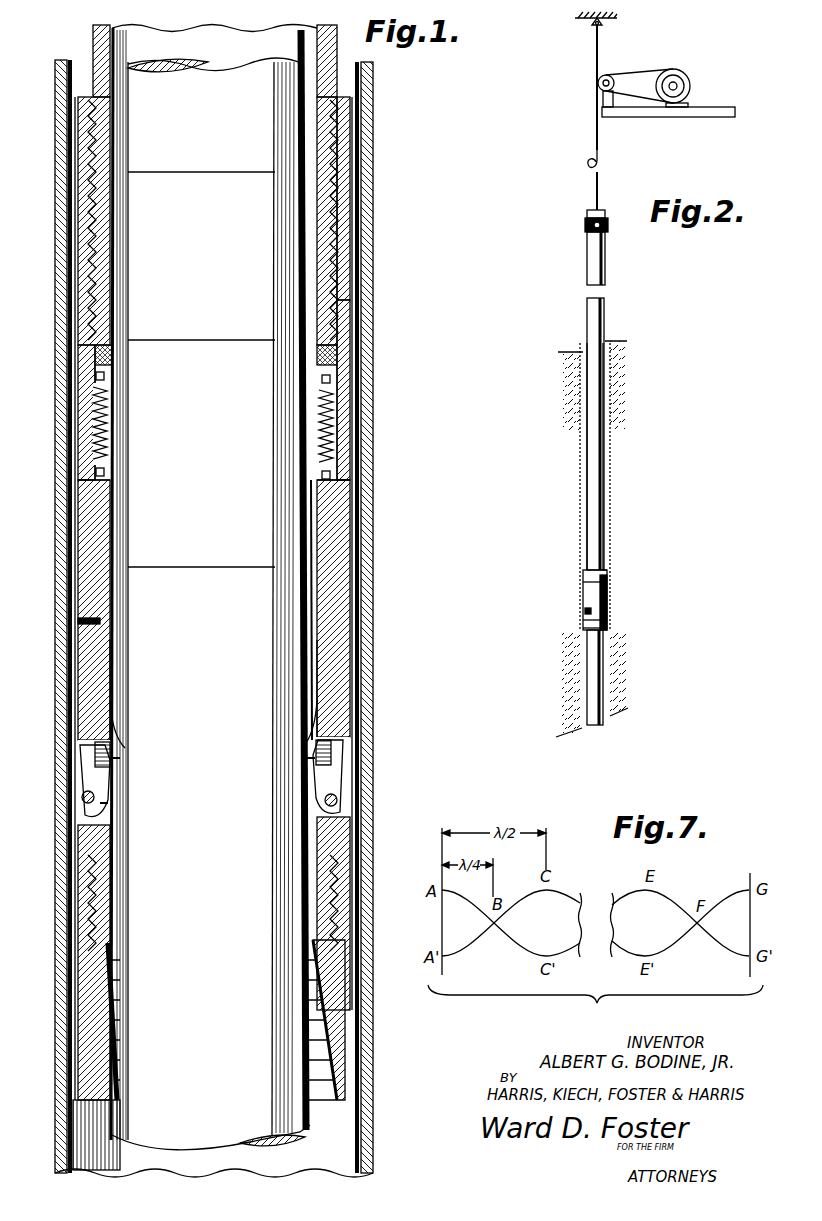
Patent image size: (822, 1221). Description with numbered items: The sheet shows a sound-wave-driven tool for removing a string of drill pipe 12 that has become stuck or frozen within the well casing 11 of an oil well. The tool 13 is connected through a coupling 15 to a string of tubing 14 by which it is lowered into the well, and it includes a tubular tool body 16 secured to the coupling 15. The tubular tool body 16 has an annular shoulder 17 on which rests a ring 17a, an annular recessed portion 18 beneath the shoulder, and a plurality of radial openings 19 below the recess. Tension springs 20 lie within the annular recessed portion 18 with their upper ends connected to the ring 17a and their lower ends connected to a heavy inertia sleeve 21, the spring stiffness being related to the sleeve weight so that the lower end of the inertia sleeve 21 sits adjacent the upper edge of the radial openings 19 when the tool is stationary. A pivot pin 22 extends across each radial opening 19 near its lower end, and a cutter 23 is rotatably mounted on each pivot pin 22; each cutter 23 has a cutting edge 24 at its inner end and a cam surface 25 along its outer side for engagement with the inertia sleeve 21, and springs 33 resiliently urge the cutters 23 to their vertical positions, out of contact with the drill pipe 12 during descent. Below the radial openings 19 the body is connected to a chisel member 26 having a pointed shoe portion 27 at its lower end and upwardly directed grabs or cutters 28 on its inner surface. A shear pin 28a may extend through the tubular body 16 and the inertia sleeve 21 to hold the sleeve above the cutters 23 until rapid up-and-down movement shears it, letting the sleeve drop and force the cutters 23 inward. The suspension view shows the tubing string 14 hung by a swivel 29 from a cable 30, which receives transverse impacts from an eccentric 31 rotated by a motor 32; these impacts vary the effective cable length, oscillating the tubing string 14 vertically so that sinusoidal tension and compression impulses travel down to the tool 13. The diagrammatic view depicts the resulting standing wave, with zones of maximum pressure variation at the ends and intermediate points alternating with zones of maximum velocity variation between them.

In FIG. 1, the well casing 11 is at (372, 195).
In FIG. 2, the well casing 11 is at (610, 440).
In FIG. 1, the string of drill pipe 12 is at (275, 641).
In FIG. 2, the string of drill pipe 12 is at (600, 682).
In FIG. 1, the tool 13 is at (82, 230).
In FIG. 2, the tool 13 is at (571, 584).
In FIG. 1, the string of tubing 14 is at (97, 47).
In FIG. 2, the string of tubing 14 is at (590, 310).
In FIG. 1, the coupling 15 is at (350, 235).
In FIG. 2, the coupling 15 is at (607, 572).
In FIG. 1, the tubular tool body 16 is at (83, 543).
In FIG. 2, the tubular tool body 16 is at (607, 600).
In FIG. 1, the annular shoulder 17 is at (340, 380).
In FIG. 1, the ring 17a is at (95, 358).
In FIG. 1, the annular recessed portion 18 is at (330, 565).
In FIG. 1, the radial openings 19 is at (95, 748).
In FIG. 2, the radial openings 19 is at (585, 612).
In FIG. 1, the tension springs 20 is at (95, 440).
In FIG. 1, the inertia sleeve 21 is at (98, 674).
In FIG. 1, the pivot pin 22 is at (88, 803).
In FIG. 1, the cutter 23 is at (301, 763).
In FIG. 1, the cutting edge 24 is at (100, 730).
In FIG. 1, the cam surface 25 is at (95, 765).
In FIG. 1, the chisel member 26 is at (80, 975).
In FIG. 2, the chisel member 26 is at (583, 625).
In FIG. 1, the pointed shoe portion 27 is at (80, 1078).
In FIG. 1, the grabs or cutters 28 is at (335, 1050).
In FIG. 1, the shear pin 28a is at (100, 620).
In FIG. 2, the swivel 29 is at (583, 225).
In FIG. 2, the cable 30 is at (594, 57).
In FIG. 2, the eccentric 31 is at (610, 76).
In FIG. 2, the motor 32 is at (689, 76).
In FIG. 1, the springs 33 is at (95, 800).